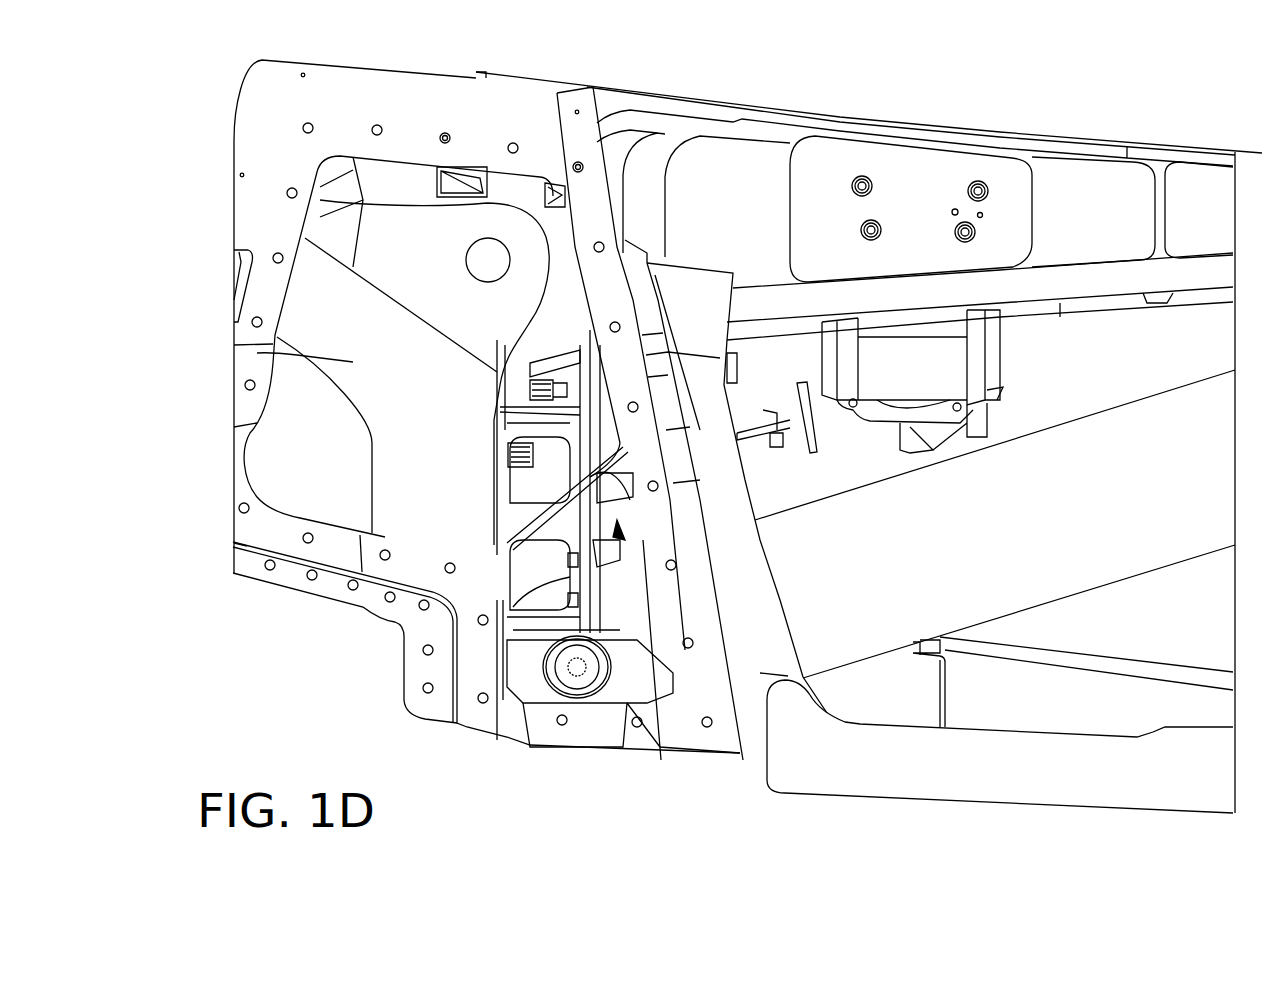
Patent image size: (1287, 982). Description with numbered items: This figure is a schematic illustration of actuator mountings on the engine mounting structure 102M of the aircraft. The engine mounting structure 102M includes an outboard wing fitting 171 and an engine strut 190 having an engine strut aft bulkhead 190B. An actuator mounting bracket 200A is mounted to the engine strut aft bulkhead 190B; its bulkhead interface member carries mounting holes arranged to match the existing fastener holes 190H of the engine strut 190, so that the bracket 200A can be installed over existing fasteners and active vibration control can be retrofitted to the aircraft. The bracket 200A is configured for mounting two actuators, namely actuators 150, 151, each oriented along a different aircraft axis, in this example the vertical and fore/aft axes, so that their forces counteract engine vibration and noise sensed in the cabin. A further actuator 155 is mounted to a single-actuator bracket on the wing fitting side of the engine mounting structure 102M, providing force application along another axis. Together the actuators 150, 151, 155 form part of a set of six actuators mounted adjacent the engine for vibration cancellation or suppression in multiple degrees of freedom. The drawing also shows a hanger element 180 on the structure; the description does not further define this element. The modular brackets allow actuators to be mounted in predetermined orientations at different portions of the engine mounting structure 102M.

The engine mounting structure 102M is at (897, 99).
The outboard wing fitting 171 is at (1093, 172).
The actuator 155 is at (1003, 368).
The hanger bracket 180 is at (813, 437).
The actuator 151 is at (633, 545).
The actuator 150 is at (640, 673).
The engine strut 190 is at (257, 353).
The engine strut aft bulkhead 190B is at (500, 422).
The existing fastener holes 190H is at (490, 462).
The actuator mounting bracket 200A is at (520, 513).